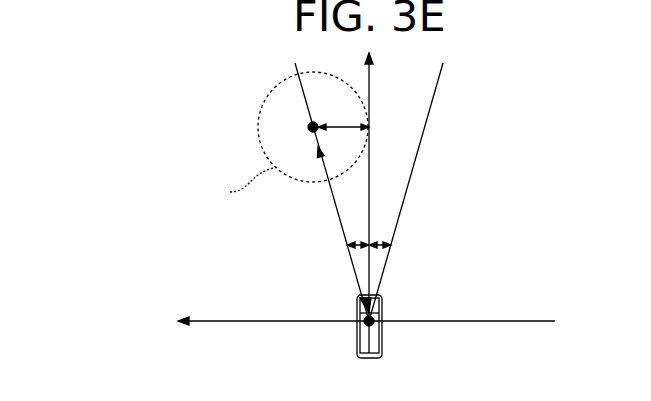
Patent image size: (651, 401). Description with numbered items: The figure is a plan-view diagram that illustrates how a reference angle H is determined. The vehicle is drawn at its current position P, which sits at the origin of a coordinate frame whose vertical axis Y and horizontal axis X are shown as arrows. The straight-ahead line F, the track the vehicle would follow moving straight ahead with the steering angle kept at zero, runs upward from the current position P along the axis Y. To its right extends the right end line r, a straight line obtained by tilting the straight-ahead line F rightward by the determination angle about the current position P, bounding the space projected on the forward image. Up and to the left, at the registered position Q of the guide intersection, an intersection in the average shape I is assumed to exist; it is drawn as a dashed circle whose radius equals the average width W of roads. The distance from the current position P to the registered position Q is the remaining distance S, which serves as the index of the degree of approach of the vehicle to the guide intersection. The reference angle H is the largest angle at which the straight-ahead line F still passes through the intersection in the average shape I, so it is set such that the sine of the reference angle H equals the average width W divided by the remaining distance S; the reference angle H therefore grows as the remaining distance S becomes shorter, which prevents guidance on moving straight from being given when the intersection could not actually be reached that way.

The Y axis Y is at (378, 201).
The X axis X is at (366, 331).
The remaining distance S is at (333, 200).
The right end line r is at (417, 162).
The intersection region (average shape) I is at (297, 72).
The registered position Q is at (308, 127).
The average width of roads W is at (343, 118).
The reference angle H is at (347, 250).
The straight-ahead line F is at (384, 268).
The current position P is at (357, 327).